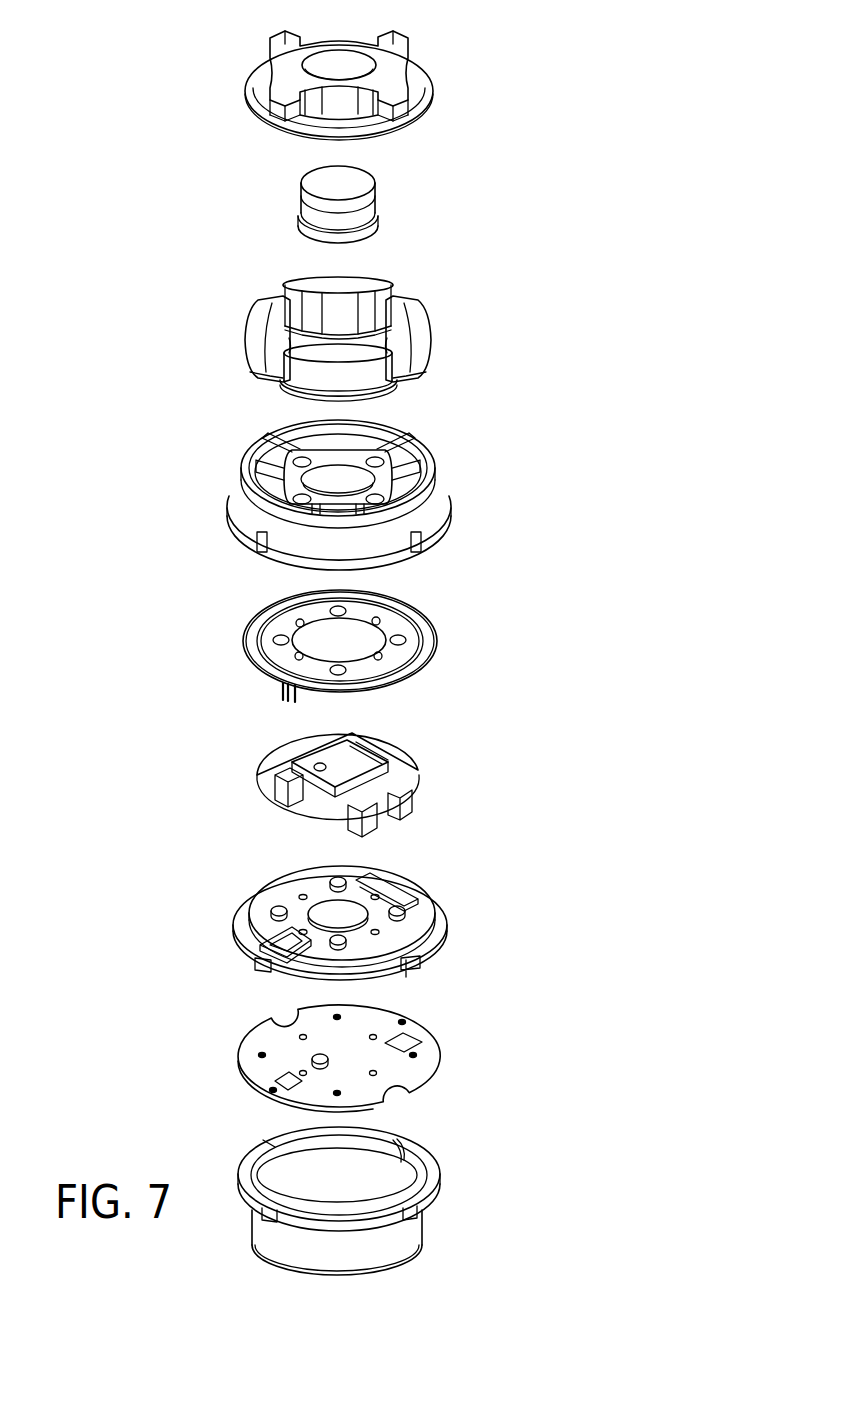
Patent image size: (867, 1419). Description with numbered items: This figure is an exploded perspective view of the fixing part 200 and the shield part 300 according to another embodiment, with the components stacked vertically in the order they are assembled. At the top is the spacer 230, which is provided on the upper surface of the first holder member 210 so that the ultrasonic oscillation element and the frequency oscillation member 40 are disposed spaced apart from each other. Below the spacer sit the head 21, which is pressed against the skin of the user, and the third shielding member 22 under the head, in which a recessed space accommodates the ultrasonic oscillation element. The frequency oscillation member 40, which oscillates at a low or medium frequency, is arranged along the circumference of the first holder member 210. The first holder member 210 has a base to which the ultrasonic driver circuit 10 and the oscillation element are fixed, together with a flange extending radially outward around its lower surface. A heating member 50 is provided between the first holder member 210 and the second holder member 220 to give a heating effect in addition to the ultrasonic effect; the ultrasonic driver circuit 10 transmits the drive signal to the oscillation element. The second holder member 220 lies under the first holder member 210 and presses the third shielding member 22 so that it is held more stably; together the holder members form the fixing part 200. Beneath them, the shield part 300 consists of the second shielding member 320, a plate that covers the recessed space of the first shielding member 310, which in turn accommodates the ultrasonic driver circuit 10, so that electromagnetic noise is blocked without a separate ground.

The spacer 230 is at (466, 38).
The head 21 is at (365, 200).
The third shielding member 22 is at (358, 218).
The frequency oscillation member 40 is at (463, 310).
The first holder member 210 is at (476, 464).
The heating member 50 is at (461, 610).
The ultrasonic driver circuit 10 is at (441, 747).
The second holder member 220 is at (466, 892).
The second shielding member 320 is at (456, 1020).
The first shielding member 310 is at (464, 1146).
The fixing part 200 is at (593, 1237).
The shield part 300 is at (593, 1269).